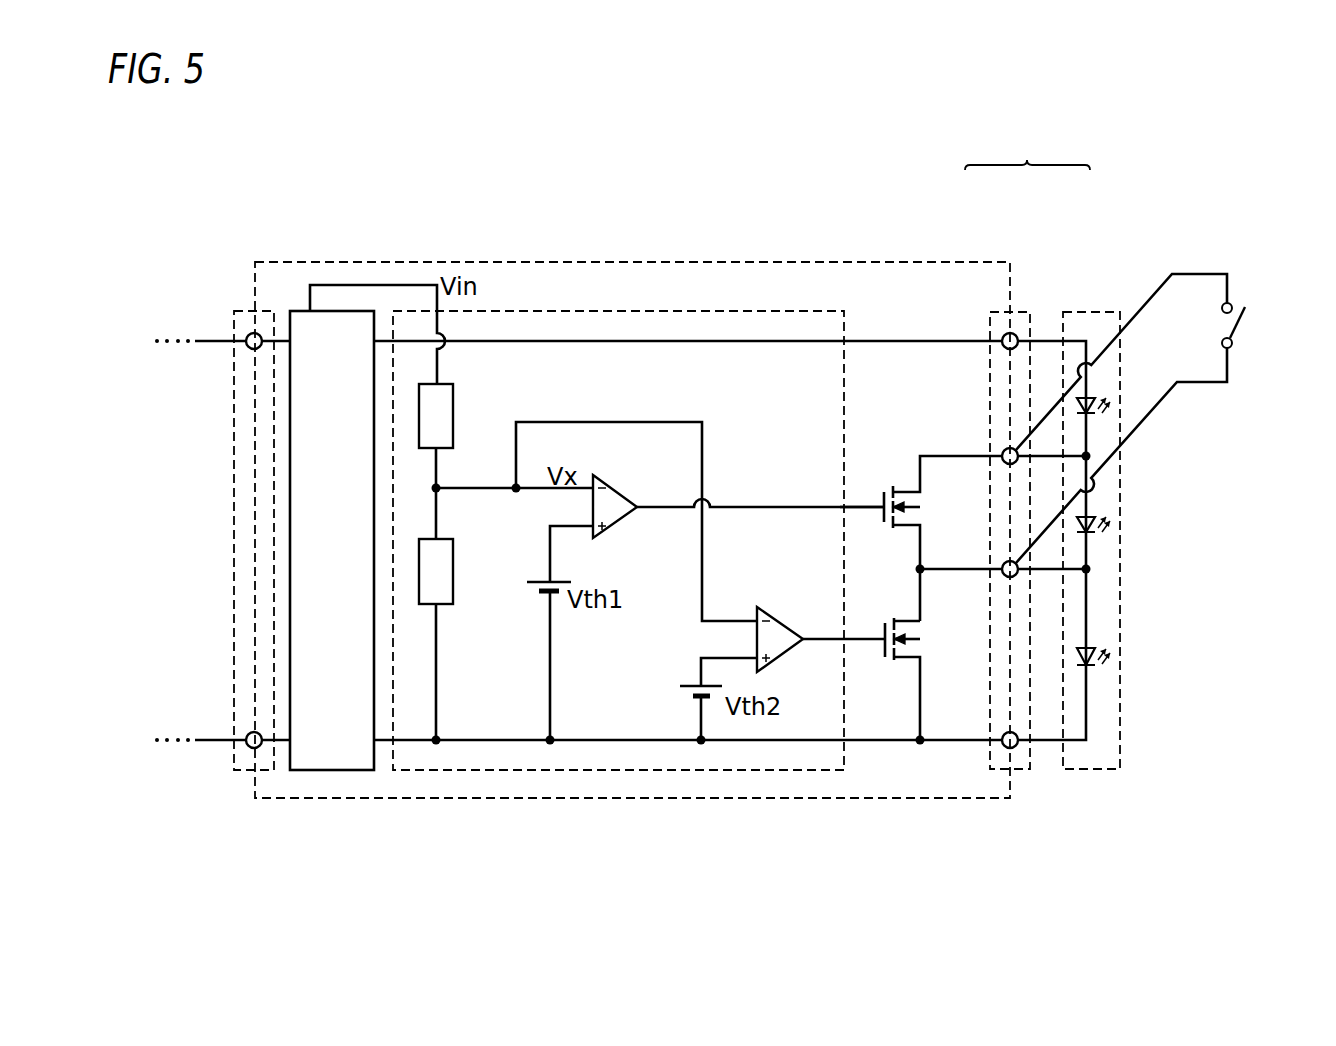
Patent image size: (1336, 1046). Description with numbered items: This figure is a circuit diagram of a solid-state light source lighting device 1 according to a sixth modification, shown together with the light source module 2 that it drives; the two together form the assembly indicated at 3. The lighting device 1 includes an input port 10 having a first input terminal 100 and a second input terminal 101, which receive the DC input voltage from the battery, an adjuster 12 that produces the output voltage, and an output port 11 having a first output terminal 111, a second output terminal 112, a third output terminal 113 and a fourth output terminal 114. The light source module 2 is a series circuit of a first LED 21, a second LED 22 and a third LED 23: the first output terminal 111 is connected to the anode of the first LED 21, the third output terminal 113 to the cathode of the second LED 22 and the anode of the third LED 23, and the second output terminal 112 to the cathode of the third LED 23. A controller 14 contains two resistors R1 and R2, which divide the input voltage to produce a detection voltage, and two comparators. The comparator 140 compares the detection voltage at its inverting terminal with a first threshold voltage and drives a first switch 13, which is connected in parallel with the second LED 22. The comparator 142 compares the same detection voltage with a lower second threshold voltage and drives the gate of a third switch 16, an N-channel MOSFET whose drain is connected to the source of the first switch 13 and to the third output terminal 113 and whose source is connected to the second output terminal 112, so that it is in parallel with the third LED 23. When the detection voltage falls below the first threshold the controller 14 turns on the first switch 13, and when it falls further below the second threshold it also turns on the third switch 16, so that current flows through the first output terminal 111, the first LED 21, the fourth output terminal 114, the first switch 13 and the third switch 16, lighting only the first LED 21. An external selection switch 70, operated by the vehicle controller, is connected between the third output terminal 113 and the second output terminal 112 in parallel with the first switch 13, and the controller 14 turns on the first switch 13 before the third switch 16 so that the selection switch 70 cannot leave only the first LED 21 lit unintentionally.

The solid-state light source lighting device 1 is at (953, 260).
The light source module 2 is at (1083, 306).
The lighting system 3 is at (1034, 156).
The input port 10 is at (239, 306).
The first input terminal 100 is at (247, 336).
The second input terminal 101 is at (249, 746).
The output port 11 is at (1022, 306).
The first output terminal 111 is at (1003, 335).
The second output terminal 112 is at (1003, 746).
The third output terminal 113 is at (1001, 576).
The fourth output terminal 114 is at (1003, 450).
The adjuster 12 is at (323, 772).
The first switch 13 is at (889, 530).
The controller 14 is at (477, 772).
The comparator 140 is at (613, 500).
The comparator 142 is at (778, 632).
The third switch 16 is at (888, 660).
The first LED 21 is at (1097, 387).
The second LED 22 is at (1098, 535).
The third LED 23 is at (1102, 670).
The selection switch 70 is at (1242, 333).
The resistor R1 is at (447, 418).
The resistor R2 is at (447, 573).